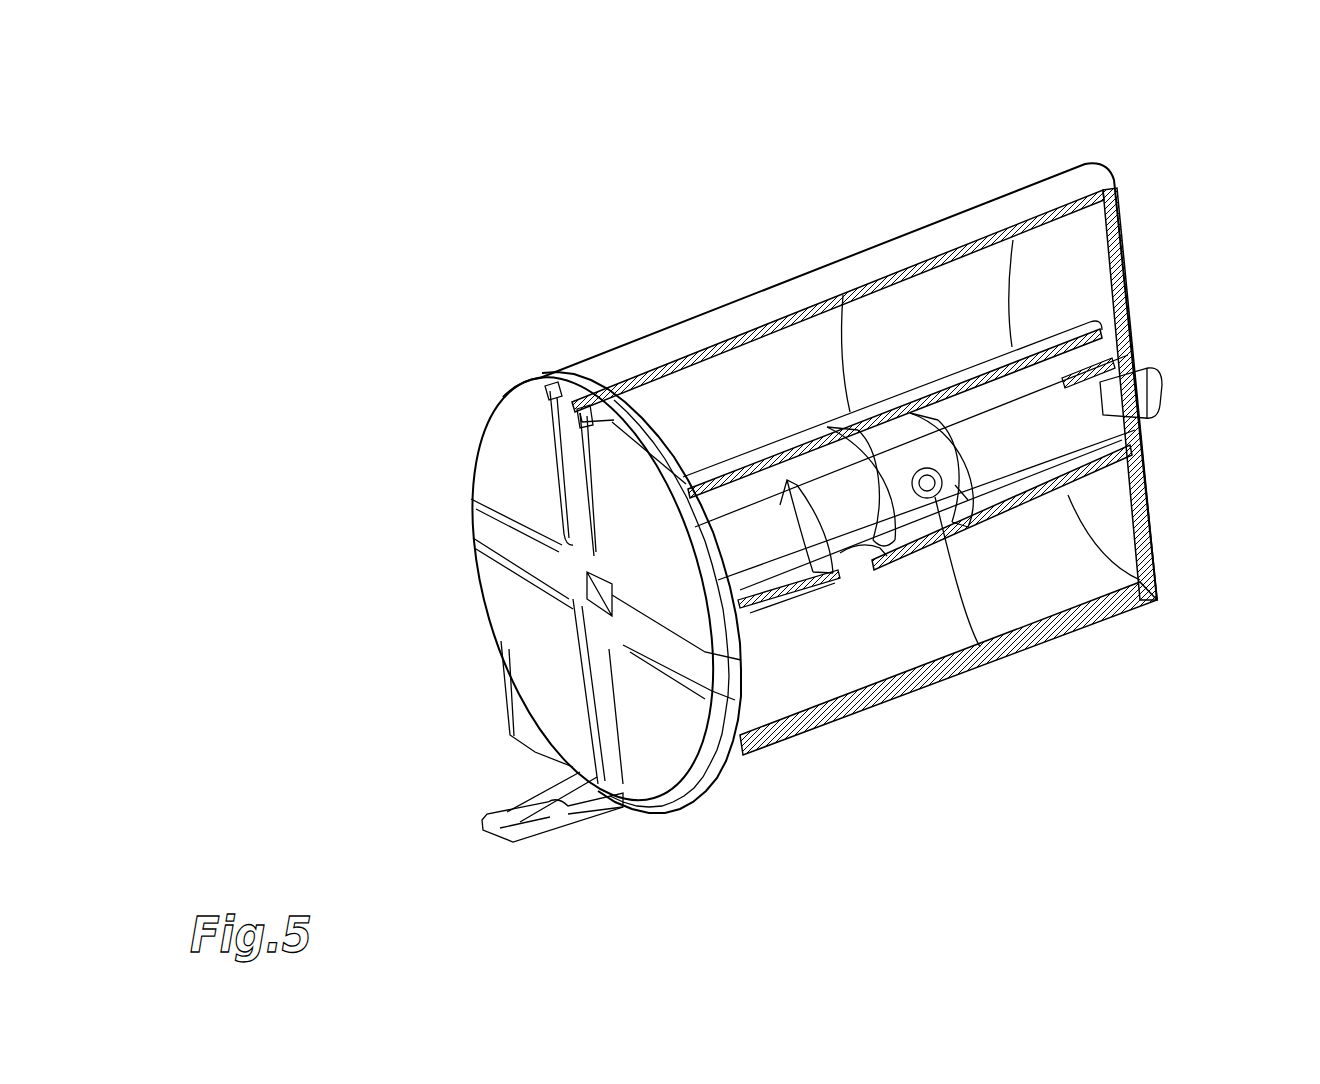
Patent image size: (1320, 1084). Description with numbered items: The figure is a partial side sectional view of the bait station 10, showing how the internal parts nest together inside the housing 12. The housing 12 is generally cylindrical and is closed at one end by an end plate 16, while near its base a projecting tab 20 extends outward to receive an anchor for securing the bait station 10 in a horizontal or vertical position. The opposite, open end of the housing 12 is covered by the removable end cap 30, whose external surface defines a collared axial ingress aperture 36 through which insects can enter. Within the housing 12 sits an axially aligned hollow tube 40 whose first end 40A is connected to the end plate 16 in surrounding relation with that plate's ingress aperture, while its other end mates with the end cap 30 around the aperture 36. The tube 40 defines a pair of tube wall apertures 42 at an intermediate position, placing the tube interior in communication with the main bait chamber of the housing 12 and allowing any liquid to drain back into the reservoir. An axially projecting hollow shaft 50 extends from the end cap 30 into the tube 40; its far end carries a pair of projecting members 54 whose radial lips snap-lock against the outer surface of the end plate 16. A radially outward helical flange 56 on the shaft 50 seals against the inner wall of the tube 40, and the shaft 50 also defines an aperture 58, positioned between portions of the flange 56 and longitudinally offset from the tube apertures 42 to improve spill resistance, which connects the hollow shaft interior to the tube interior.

The bait station 10 is at (648, 214).
The housing 12 is at (805, 298).
The end plate 16 is at (1123, 240).
The projecting tab 20 is at (503, 812).
The end cap 30 is at (492, 478).
The axial ingress aperture 36 is at (592, 600).
The hollow tube 40 is at (957, 377).
The first end of tube 40A is at (1108, 323).
The tube wall apertures 42 is at (830, 430).
The shaft 50 is at (1035, 451).
The projecting members 54 is at (1160, 398).
The helical flange 56 is at (960, 497).
The shaft aperture 58 is at (926, 500).